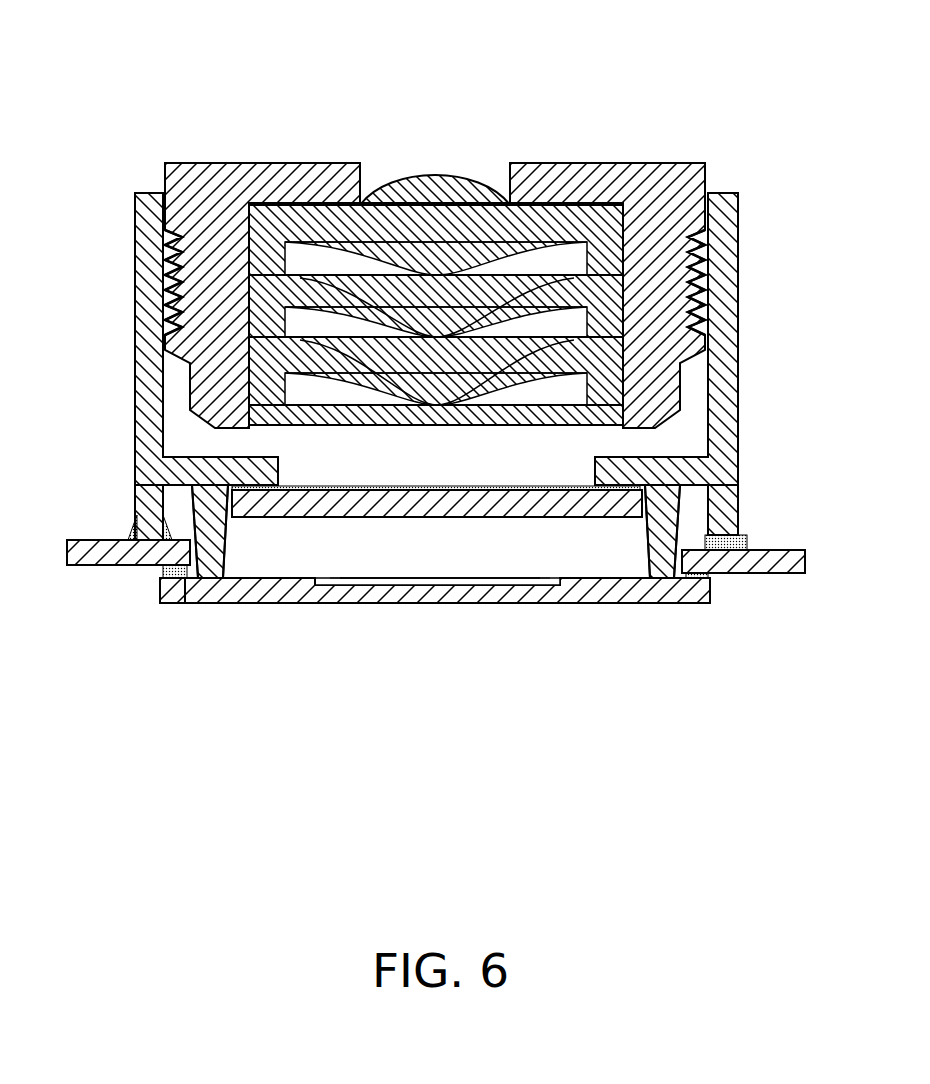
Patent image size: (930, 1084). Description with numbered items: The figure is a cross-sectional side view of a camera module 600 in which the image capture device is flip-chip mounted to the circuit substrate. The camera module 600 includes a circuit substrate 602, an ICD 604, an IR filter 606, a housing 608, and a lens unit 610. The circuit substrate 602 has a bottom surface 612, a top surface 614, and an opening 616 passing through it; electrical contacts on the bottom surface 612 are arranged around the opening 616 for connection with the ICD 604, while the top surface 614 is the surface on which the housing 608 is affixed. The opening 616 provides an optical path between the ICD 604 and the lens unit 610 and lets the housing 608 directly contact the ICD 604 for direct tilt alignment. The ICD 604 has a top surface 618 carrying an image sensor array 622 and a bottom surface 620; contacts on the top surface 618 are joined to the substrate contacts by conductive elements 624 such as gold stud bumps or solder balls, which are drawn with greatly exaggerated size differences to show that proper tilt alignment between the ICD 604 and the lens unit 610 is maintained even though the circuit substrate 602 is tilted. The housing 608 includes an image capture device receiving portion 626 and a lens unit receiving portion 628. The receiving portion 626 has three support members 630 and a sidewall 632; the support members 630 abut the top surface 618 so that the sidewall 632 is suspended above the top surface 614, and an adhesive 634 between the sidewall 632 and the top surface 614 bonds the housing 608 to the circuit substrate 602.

The camera module 600 is at (184, 101).
The circuit substrate 602 is at (188, 561).
The ICD 604 is at (458, 592).
The IR filter 606 is at (410, 507).
The housing 608 is at (725, 378).
The lens unit 610 is at (662, 178).
The bottom surface 612 is at (97, 566).
The top surface 614 is at (98, 539).
The opening 616 is at (537, 569).
The top surface 618 is at (300, 578).
The bottom surface 620 is at (335, 604).
The image sensor array 622 is at (453, 578).
The conductive elements 624 is at (178, 580).
The image capture device receiving portion 626 is at (69, 470).
The lens unit receiving portion 628 is at (94, 285).
The support members 630 is at (217, 550).
The sidewall 632 is at (145, 492).
The adhesive 634 is at (130, 532).